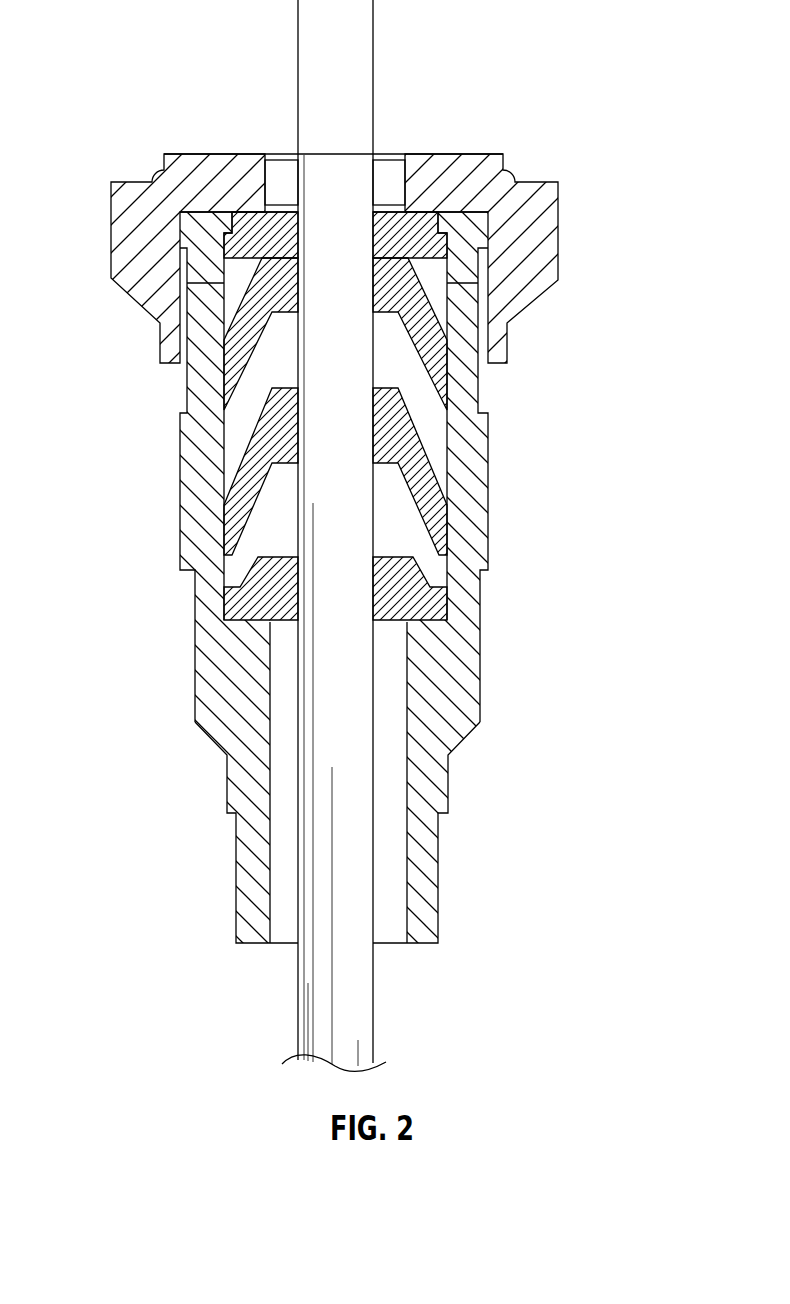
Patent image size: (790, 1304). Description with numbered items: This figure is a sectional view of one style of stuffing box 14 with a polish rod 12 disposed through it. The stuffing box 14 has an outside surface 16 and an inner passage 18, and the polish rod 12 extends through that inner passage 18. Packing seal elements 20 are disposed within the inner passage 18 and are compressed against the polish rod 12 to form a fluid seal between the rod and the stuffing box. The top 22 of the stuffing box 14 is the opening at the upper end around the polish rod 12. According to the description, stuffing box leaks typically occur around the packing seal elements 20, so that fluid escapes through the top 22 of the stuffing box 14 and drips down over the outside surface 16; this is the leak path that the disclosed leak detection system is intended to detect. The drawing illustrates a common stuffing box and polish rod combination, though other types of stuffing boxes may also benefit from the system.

The polish rod 12 is at (372, 62).
The stuffing box 14 is at (597, 319).
The outside surface 16 is at (488, 474).
The inner passage 18 is at (393, 708).
The packing seal elements 20 is at (240, 460).
The top 22 is at (380, 172).